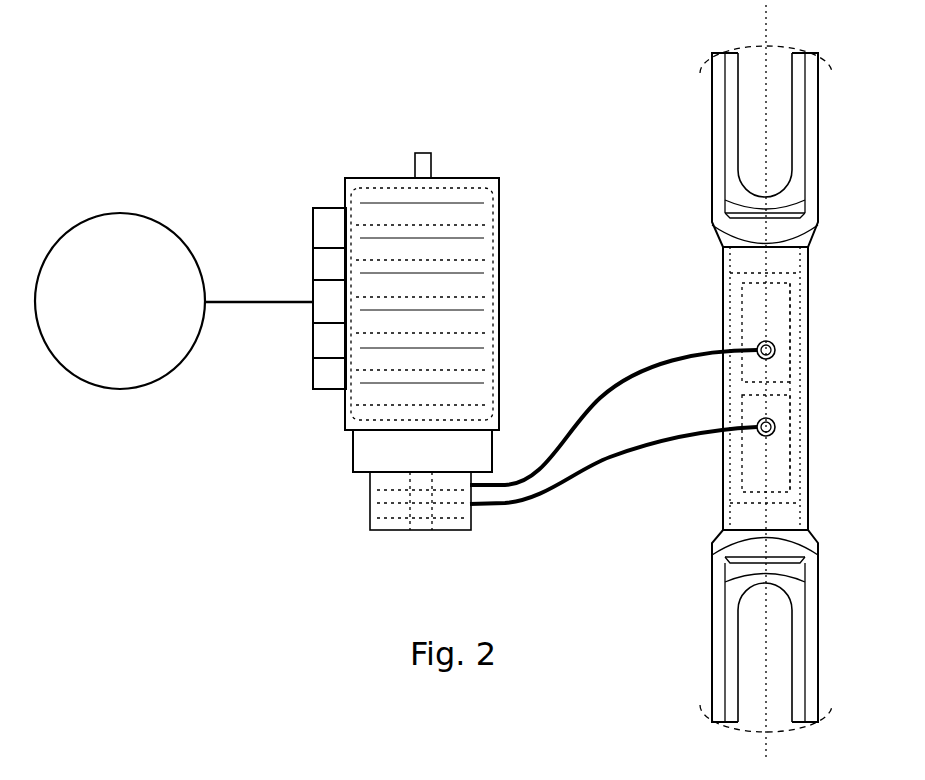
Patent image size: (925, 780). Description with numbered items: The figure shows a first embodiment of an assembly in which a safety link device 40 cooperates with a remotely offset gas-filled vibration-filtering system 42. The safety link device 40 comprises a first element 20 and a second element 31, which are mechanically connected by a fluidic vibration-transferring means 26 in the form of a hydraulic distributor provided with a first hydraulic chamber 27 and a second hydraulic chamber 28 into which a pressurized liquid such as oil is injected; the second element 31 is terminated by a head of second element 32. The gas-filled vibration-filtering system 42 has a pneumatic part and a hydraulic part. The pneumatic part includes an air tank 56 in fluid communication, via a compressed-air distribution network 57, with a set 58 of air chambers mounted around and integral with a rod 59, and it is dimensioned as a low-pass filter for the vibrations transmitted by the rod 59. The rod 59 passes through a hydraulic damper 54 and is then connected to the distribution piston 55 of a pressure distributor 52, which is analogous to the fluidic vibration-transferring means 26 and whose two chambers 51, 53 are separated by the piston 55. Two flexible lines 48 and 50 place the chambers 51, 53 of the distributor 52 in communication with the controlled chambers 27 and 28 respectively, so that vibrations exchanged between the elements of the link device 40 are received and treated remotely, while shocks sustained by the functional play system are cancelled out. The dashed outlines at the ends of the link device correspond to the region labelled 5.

The hanger / suspension assembly 5 is at (712, 722).
The first element 20 is at (813, 119).
The fluidic vibration-transferring means 26 is at (838, 292).
The first hydraulic chamber 27 is at (800, 455).
The second hydraulic chamber 28 is at (790, 316).
The second element 31 is at (790, 484).
The head of second element 32 is at (732, 128).
The safety link device 40 is at (668, 72).
The gas-filled vibration-filtering system 42 is at (203, 180).
The flexible line 48 is at (615, 393).
The flexible line 50 is at (600, 463).
The chamber 51 is at (378, 497).
The pressure distributor 52 is at (310, 488).
The chamber 53 is at (392, 508).
The hydraulic damper 54 is at (310, 443).
The distribution piston 55 is at (413, 504).
The air tank 56 is at (85, 233).
The compressed-air distribution network 57 is at (265, 300).
The set of air chambers 58 is at (520, 180).
The rod 59 is at (420, 152).